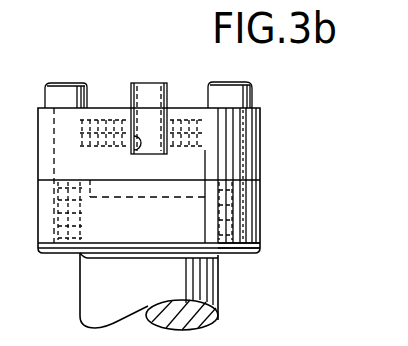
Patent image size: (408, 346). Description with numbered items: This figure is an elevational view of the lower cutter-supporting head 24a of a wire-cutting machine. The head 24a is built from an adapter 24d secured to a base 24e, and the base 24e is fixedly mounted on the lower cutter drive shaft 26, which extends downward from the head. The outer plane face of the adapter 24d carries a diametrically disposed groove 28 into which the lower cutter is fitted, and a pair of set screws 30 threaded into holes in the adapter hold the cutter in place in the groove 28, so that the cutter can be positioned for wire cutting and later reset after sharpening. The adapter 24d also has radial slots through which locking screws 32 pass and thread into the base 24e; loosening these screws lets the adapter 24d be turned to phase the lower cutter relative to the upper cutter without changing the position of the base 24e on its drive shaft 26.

The cutter-supporting head 24a is at (262, 205).
The adapter 24d is at (261, 140).
The base 24e is at (257, 237).
The cutter drive shaft 26 is at (220, 287).
The groove 28 is at (136, 151).
The set screws 30 is at (110, 108).
The locking screws 32 is at (247, 90).